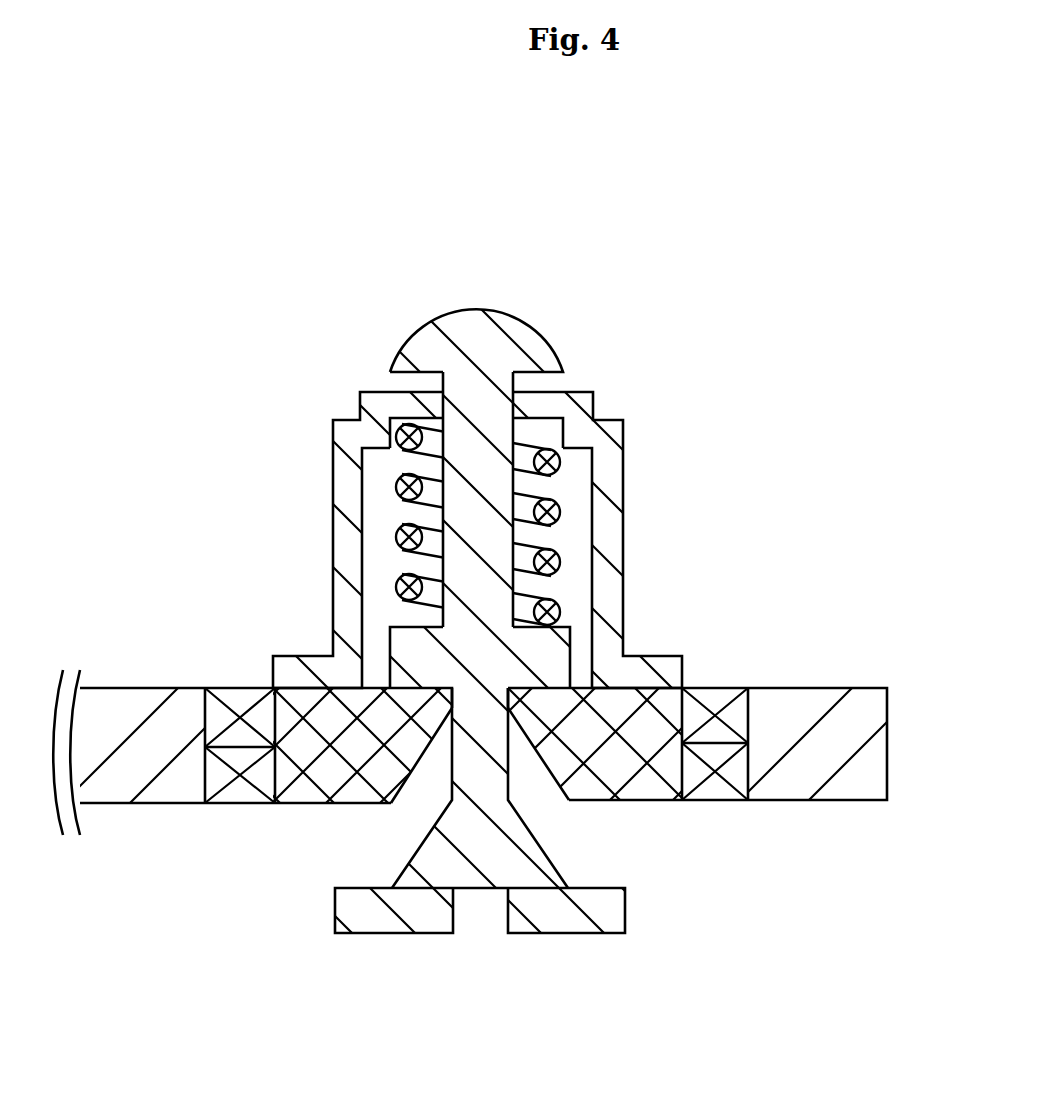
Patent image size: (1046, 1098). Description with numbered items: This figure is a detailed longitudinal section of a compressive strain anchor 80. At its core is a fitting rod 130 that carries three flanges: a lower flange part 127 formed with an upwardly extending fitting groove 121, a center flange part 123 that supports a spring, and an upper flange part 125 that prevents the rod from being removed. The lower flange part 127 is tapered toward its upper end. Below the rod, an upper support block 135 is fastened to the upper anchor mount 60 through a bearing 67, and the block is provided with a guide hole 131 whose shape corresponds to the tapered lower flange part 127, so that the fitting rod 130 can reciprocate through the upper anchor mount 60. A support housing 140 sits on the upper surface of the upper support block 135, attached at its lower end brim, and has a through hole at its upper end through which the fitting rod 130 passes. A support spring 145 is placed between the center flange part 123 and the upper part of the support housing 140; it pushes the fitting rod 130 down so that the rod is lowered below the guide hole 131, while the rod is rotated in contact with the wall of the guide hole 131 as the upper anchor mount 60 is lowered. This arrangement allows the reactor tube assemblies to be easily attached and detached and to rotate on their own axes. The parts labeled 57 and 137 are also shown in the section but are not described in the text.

The compressive strain anchor 80 is at (758, 339).
The upper flange part 125 is at (497, 343).
The fitting rod 130 is at (460, 381).
The stepped bore shoulder of cap 137 is at (518, 410).
The support housing 140 is at (616, 505).
The support spring 145 is at (390, 530).
The center flange part 123 is at (558, 653).
The lower flange part 127 is at (553, 860).
The fitting groove 121 is at (477, 892).
The plate 57 is at (237, 688).
The upper support block 135 is at (284, 787).
The guide hole 131 is at (420, 772).
The upper anchor mount 60 is at (866, 681).
The bearing 67 is at (723, 687).